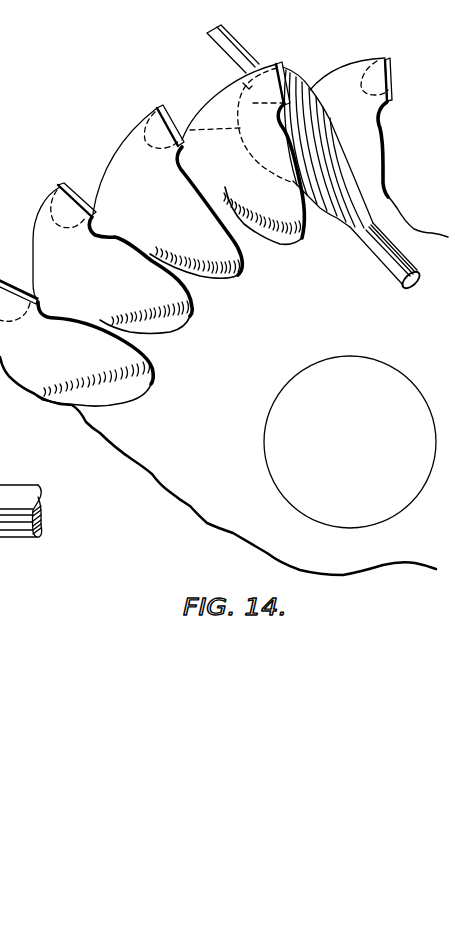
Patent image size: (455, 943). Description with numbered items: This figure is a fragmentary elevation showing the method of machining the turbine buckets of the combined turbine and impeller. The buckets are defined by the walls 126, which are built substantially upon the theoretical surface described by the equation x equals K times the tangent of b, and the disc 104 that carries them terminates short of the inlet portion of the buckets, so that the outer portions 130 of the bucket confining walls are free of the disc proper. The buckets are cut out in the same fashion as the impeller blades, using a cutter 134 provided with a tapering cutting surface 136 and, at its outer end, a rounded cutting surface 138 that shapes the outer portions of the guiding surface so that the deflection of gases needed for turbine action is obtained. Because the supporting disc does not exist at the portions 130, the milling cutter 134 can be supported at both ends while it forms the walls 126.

The disc 104 is at (192, 475).
The walls 126 is at (111, 262).
The outer portions of the bucket confining walls 130 is at (156, 111).
The cutter 134 is at (386, 238).
The tapering cutting surface 136 is at (330, 160).
The rounded cutting surface 138 is at (211, 134).